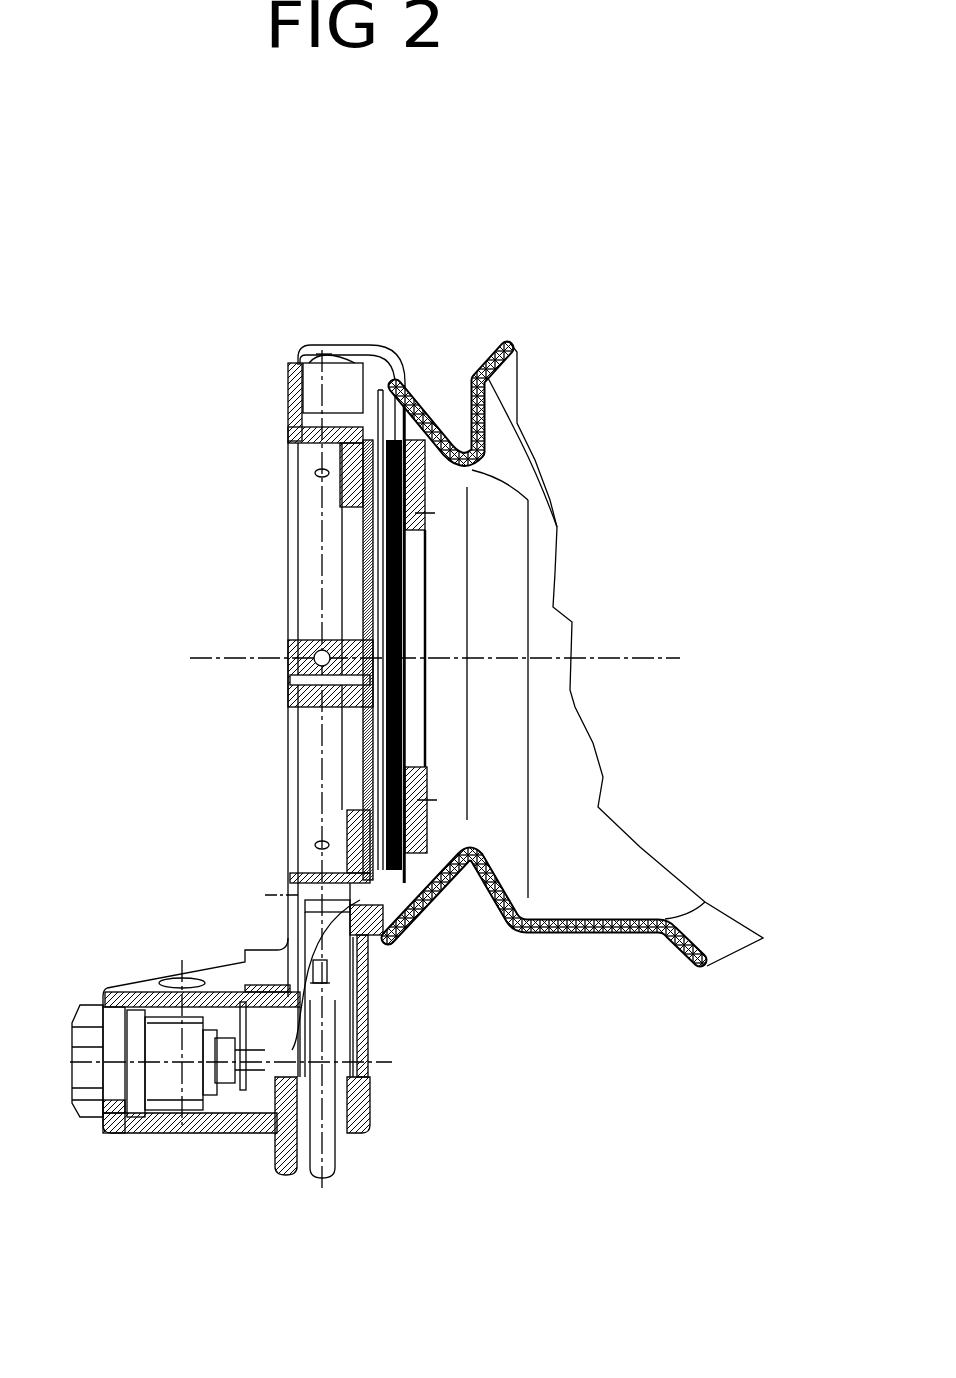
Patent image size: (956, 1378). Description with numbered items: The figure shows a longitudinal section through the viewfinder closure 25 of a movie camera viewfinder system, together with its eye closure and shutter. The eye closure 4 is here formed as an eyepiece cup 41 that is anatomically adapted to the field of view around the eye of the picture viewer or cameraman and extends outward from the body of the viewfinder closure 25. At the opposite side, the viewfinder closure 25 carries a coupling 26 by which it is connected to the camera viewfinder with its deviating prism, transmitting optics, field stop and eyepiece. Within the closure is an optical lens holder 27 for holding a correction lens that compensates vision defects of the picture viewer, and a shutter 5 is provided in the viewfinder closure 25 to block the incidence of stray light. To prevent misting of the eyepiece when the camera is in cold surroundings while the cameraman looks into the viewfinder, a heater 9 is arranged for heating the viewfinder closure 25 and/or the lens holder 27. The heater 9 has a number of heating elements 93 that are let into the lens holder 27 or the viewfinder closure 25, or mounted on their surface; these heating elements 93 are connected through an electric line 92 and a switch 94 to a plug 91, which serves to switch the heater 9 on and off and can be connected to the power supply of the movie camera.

The eye closure 4 is at (511, 303).
The shutter 5 is at (388, 578).
The heater 9 is at (316, 1313).
The viewfinder closure 25 is at (157, 766).
The coupling 26 is at (287, 425).
The optical lens holder 27 is at (415, 628).
The eyepiece cup 41 is at (572, 763).
The plug 91 is at (175, 1090).
The electric line 92 is at (333, 946).
The heating elements 93 is at (437, 897).
The switch 94 is at (333, 1177).